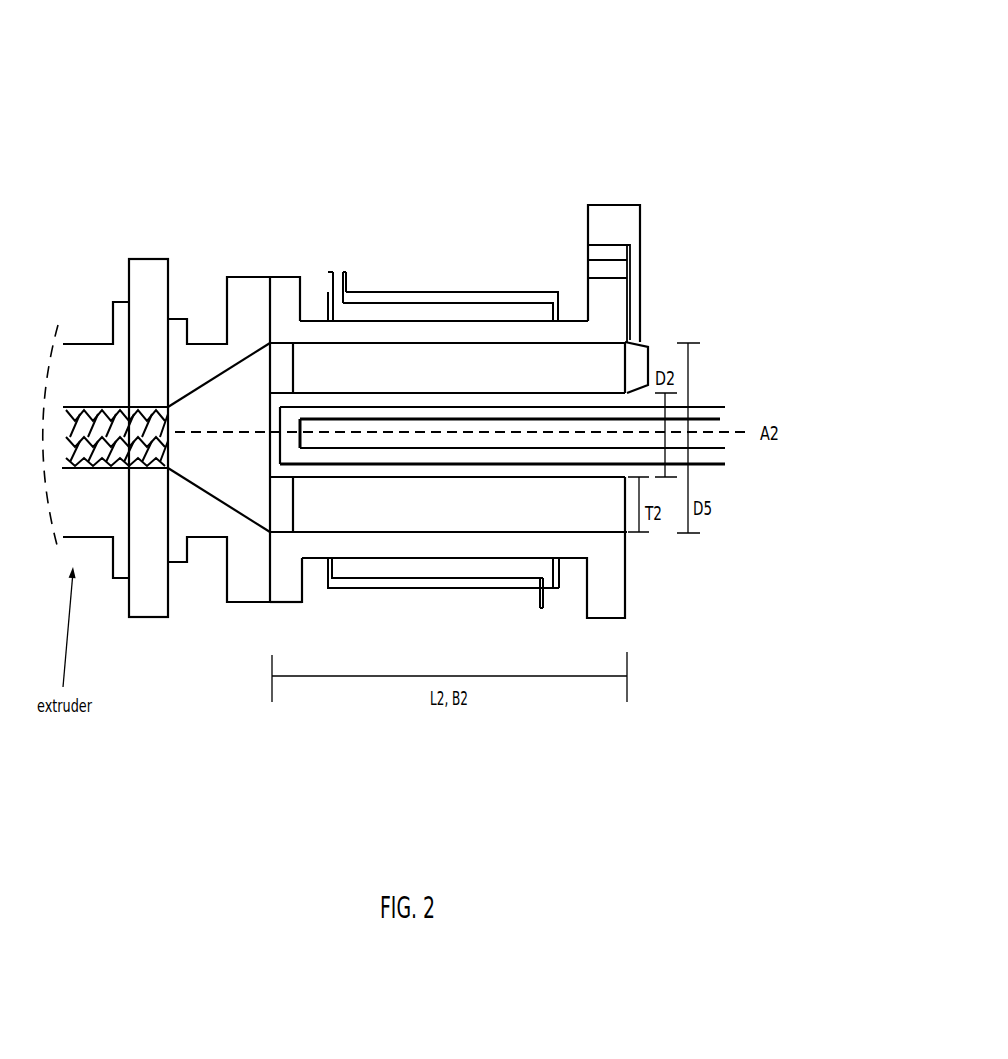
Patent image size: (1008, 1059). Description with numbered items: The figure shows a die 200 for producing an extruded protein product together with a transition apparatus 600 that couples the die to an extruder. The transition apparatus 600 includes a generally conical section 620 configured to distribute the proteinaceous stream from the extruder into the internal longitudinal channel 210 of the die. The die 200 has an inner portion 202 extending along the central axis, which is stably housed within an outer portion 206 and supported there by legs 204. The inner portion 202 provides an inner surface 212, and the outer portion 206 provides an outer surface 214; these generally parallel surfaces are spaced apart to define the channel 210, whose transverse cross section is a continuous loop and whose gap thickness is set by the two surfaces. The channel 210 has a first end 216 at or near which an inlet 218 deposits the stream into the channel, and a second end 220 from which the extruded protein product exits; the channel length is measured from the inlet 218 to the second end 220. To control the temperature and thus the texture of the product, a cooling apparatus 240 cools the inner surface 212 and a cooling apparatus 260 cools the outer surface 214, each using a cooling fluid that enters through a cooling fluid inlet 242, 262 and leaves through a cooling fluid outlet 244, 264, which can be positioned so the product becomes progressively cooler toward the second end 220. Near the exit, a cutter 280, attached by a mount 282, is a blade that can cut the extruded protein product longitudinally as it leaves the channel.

The die 200 is at (340, 70).
The transition apparatus 600 is at (205, 197).
The inner portion 202 is at (397, 398).
The legs 204 is at (282, 358).
The outer portion 206 is at (523, 332).
The internal longitudinal channel 210 is at (437, 505).
The inner surface 212 is at (430, 392).
The outer surface 214 is at (478, 535).
The first end 216 is at (257, 384).
The inlet 218 is at (263, 458).
The second end 220 is at (665, 538).
The cooling apparatus 240 is at (615, 460).
The cooling fluid inlet 242 is at (708, 453).
The cooling fluid outlet 244 is at (718, 421).
The cooling apparatus 260 is at (355, 600).
The cooling fluid inlet 262 is at (547, 590).
The cooling fluid outlet 264 is at (341, 290).
The cutter 280 is at (641, 352).
The mount 282 is at (647, 182).
The conical section 620 is at (268, 508).